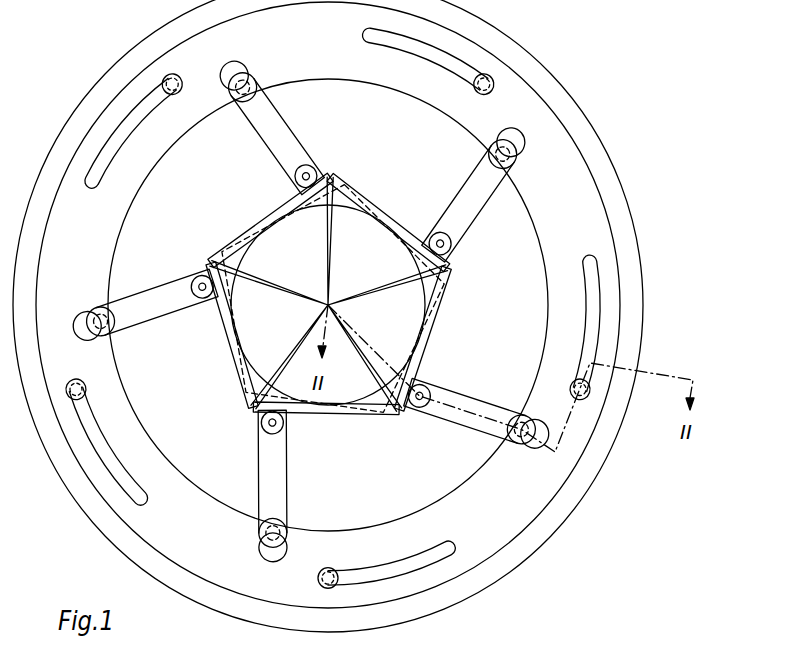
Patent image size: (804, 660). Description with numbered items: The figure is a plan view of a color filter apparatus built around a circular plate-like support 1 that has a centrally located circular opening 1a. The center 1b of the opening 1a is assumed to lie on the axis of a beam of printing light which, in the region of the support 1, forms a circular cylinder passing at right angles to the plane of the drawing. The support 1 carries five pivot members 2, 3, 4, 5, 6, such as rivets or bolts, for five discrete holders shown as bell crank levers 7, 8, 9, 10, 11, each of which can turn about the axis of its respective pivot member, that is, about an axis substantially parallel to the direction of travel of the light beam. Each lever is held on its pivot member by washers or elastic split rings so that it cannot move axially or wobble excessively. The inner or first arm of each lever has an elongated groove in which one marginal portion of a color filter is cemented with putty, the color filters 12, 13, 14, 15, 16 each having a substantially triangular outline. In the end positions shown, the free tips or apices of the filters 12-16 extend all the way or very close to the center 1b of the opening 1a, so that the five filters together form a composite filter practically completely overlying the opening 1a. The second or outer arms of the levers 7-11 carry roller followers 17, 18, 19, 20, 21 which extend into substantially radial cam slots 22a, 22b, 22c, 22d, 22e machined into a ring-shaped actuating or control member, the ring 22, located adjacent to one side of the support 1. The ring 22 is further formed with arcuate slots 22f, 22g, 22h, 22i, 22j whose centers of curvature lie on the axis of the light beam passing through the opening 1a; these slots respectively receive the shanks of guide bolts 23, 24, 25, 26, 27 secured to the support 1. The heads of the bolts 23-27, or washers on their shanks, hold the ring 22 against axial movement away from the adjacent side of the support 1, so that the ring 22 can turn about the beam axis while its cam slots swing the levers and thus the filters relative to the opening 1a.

The support 1 is at (407, 141).
The circular opening 1a is at (410, 244).
The center of the opening 1b is at (338, 290).
The pivot member 2 is at (452, 247).
The pivot member 3 is at (430, 390).
The pivot member 4 is at (290, 438).
The pivot member 5 is at (198, 278).
The pivot member 6 is at (312, 165).
The bell crank lever 7 is at (480, 205).
The bell crank lever 8 is at (483, 400).
The bell crank lever 9 is at (285, 495).
The bell crank lever 10 is at (153, 325).
The bell crank lever 11 is at (283, 130).
The color filter 12 is at (457, 270).
The color filter 13 is at (370, 425).
The color filter 14 is at (302, 432).
The color filter 15 is at (212, 310).
The color filter 16 is at (290, 194).
The roller follower 17 is at (512, 165).
The roller follower 18 is at (518, 447).
The roller follower 19 is at (290, 525).
The roller follower 20 is at (112, 312).
The roller follower 21 is at (262, 82).
The ring 22 is at (600, 223).
The cam slot 22a is at (518, 148).
The cam slot 22b is at (538, 446).
The cam slot 22c is at (277, 556).
The cam slot 22d is at (92, 312).
The cam slot 22e is at (238, 70).
The arcuate slot 22f is at (600, 318).
The arcuate slot 22g is at (450, 556).
The arcuate slot 22h is at (109, 448).
The arcuate slot 22i is at (118, 152).
The arcuate slot 22j is at (447, 52).
The guide bolt 23 is at (590, 400).
The guide bolt 24 is at (340, 577).
The guide bolt 25 is at (70, 379).
The guide bolt 26 is at (179, 78).
The guide bolt 27 is at (495, 90).